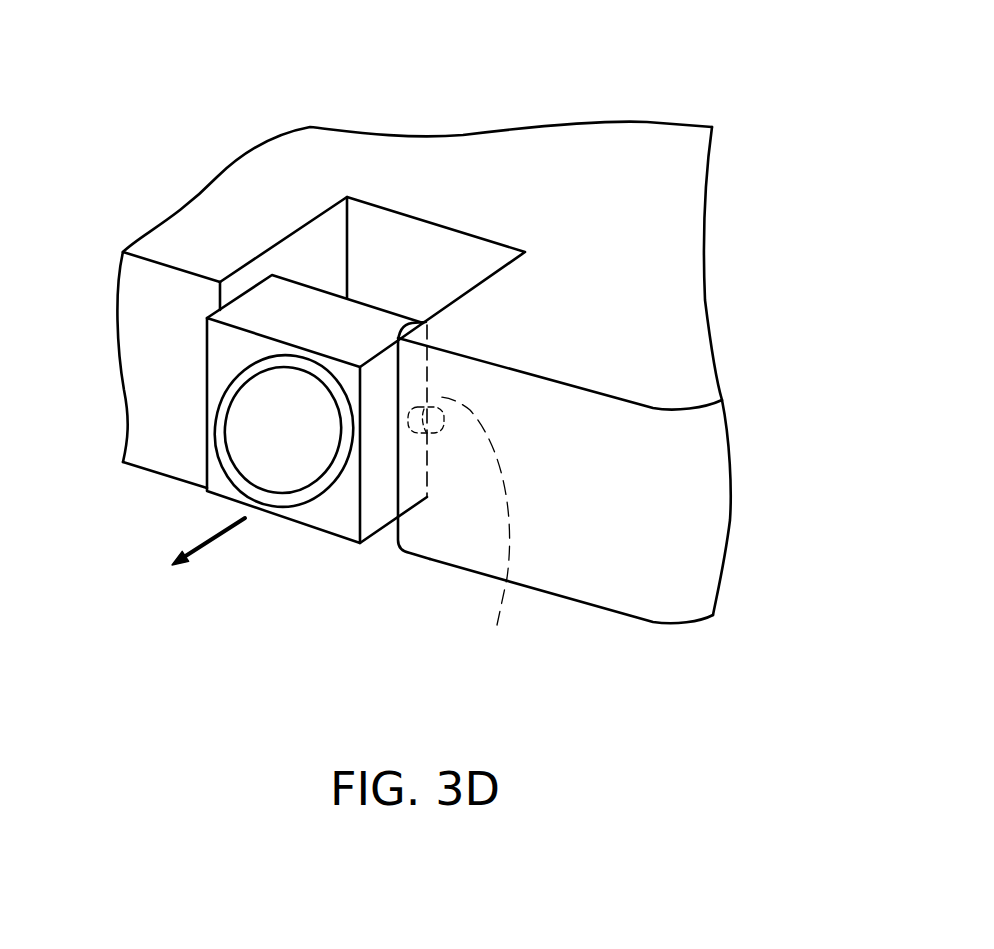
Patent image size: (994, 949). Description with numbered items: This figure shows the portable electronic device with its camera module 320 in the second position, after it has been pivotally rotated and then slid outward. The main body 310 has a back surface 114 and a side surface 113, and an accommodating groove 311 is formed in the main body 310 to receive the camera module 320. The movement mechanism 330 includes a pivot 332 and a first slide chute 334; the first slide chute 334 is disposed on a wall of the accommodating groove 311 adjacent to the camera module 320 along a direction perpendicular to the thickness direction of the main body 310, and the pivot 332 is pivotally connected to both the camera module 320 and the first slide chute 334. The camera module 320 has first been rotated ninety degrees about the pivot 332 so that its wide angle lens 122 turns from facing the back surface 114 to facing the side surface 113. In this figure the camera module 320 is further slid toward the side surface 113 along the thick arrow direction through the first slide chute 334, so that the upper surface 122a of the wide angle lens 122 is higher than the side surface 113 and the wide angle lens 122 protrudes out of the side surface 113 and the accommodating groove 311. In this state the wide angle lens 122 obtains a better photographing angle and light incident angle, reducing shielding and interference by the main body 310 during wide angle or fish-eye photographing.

The main body 310 is at (642, 107).
The accommodating groove 311 is at (319, 237).
The back surface 114 is at (645, 302).
The side surface 113 is at (624, 527).
The camera module 320 is at (272, 530).
The wide angle lens 122 is at (308, 478).
The upper surface 122a is at (283, 432).
The movement mechanism 330 is at (465, 554).
The pivot 332 is at (438, 437).
The first slide chute 334 is at (449, 397).